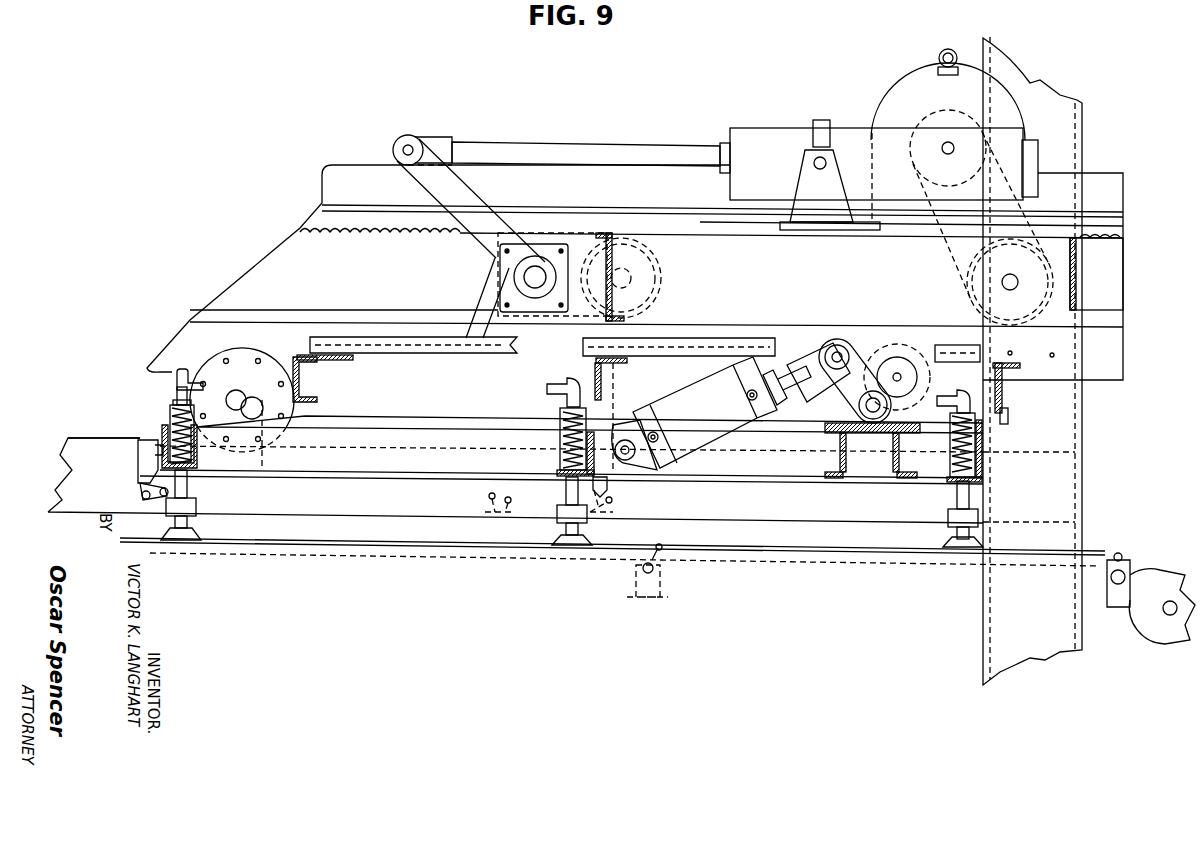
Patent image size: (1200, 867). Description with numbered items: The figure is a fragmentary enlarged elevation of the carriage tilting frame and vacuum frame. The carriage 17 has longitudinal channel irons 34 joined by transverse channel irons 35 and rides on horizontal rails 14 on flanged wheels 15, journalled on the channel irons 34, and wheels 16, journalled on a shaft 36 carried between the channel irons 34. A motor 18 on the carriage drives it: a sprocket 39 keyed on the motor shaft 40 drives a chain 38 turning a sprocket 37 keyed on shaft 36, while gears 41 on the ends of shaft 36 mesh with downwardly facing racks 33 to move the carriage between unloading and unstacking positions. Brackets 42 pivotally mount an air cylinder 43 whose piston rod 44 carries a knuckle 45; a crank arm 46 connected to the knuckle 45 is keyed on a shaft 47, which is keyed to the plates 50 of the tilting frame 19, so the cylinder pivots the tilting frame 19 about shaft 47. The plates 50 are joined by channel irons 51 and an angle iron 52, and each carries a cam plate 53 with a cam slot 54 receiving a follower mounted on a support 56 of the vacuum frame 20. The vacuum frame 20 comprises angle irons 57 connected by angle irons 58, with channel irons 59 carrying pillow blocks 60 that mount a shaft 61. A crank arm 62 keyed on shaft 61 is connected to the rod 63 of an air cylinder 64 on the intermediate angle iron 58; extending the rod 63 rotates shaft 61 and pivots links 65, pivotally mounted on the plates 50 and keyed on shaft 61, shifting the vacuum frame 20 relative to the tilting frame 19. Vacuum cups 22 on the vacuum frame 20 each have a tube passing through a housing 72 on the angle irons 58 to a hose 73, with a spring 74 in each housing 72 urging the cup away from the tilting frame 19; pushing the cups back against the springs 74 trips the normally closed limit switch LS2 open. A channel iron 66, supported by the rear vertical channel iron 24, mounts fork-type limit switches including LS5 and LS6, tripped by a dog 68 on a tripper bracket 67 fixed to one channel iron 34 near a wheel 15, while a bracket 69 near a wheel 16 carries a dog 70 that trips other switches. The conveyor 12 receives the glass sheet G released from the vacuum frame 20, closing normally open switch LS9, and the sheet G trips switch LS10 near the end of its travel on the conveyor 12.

The conveyor 12 is at (842, 572).
The horizontal rails 14 is at (392, 311).
The wheels 15 is at (660, 260).
The wheels 16 is at (968, 298).
The carriage 17 is at (650, 230).
The motor 18 is at (915, 80).
The tilting frame 19 is at (497, 296).
The vacuum frame 20 is at (150, 450).
The vacuum cups 22 is at (190, 536).
The channel iron 24 is at (985, 52).
The racks 33 is at (393, 230).
The longitudinal channel irons 34 is at (791, 276).
The transverse channel irons 35 is at (645, 300).
The shaft 36 is at (1023, 282).
The sprocket 37 is at (1050, 303).
The chain 38 is at (953, 250).
The sprocket 39 is at (920, 123).
The motor shaft 40 is at (942, 148).
The gears 41 is at (1048, 287).
The brackets 42 is at (810, 160).
The air cylinder 43 is at (760, 130).
The piston rod 44 is at (565, 143).
The knuckle 45 is at (425, 140).
The crank arm 46 is at (466, 192).
The shaft 47 is at (535, 266).
The plates 50 is at (590, 404).
The channel irons 51 is at (308, 392).
The angle iron 52 is at (595, 380).
The cam plate 53 is at (288, 383).
The cam slot 54 is at (250, 395).
The cam support brackets 56 is at (287, 455).
The angle irons 57 is at (368, 470).
The angle irons 58 is at (163, 430).
The channel irons 59 is at (875, 472).
The pillow blocks 60 is at (923, 433).
The shaft 61 is at (901, 400).
The crank arm 62 is at (840, 346).
The piston rod 63 is at (787, 385).
The air cylinder 64 is at (694, 413).
The links 65 is at (882, 348).
The channel iron 66 is at (75, 438).
The tripper bracket 67 is at (614, 385).
The dog 68 is at (608, 488).
The bracket 69 is at (995, 372).
The dog 70 is at (1008, 421).
The housing 72 is at (177, 415).
The hose 73 is at (198, 372).
The spring 74 is at (560, 452).
The glass sheet G is at (755, 547).
The limit switch LS2 is at (140, 470).
The limit switch LS5 is at (485, 510).
The limit switch LS6 is at (600, 518).
The limit switch LS9 is at (668, 585).
The limit switch LS10 is at (1120, 607).